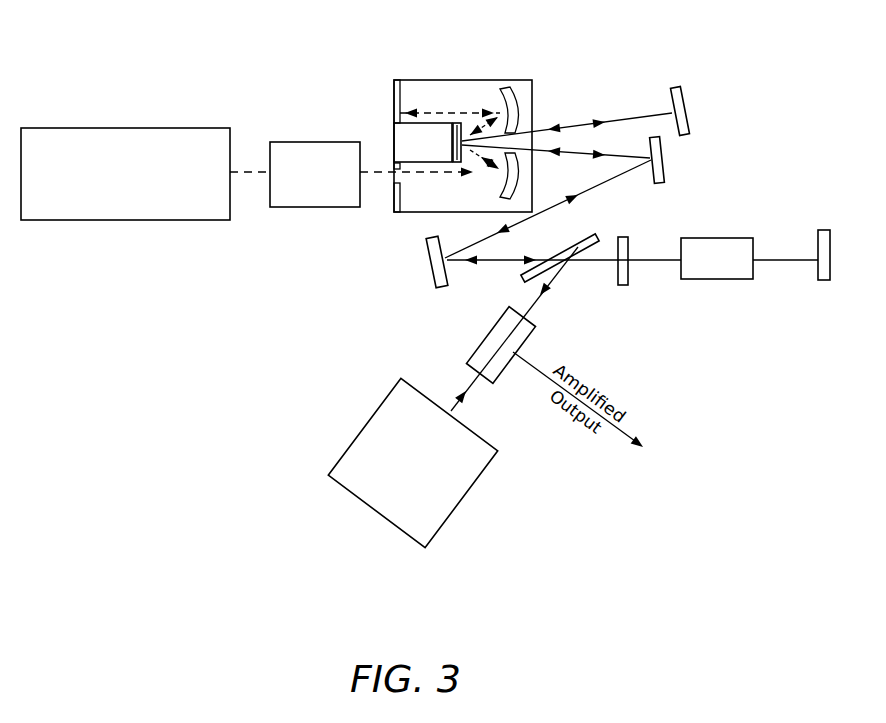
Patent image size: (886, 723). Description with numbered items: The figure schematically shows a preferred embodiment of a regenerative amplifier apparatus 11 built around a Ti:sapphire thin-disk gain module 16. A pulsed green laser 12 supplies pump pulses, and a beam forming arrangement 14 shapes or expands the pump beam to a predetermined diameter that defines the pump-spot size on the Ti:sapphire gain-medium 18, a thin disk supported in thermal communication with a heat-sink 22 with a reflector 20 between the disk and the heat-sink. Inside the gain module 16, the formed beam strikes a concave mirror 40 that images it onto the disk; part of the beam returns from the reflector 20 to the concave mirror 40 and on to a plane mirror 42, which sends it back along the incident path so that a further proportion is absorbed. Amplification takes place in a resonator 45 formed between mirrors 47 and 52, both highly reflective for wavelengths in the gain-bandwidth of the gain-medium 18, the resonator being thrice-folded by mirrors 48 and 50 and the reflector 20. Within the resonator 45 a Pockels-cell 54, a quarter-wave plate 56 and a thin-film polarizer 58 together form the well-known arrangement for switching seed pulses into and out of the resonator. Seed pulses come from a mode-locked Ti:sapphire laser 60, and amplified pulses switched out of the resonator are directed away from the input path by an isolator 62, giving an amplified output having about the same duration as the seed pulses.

The regenerative amplifier apparatus 11 is at (196, 530).
The laser 12 is at (135, 221).
The beam forming arrangement 14 is at (300, 208).
The gain module 16 is at (418, 216).
The Ti:sapphire gain-medium 18 is at (467, 114).
The reflector 20 is at (460, 117).
The heat-sink 22 is at (433, 116).
The concave mirror 40 is at (512, 94).
The plane mirror 42 is at (401, 98).
The resonator 45 is at (663, 109).
The mirror 47 is at (818, 265).
The mirror 48 is at (440, 279).
The mirror 50 is at (663, 172).
The mirror 52 is at (677, 88).
The Pockels-cell 54 is at (727, 237).
The quarter-wave plate 56 is at (623, 286).
The thin-film polarizer 58 is at (578, 236).
The mode-locked Ti:sapphire laser 60 is at (443, 523).
The isolator 62 is at (478, 350).